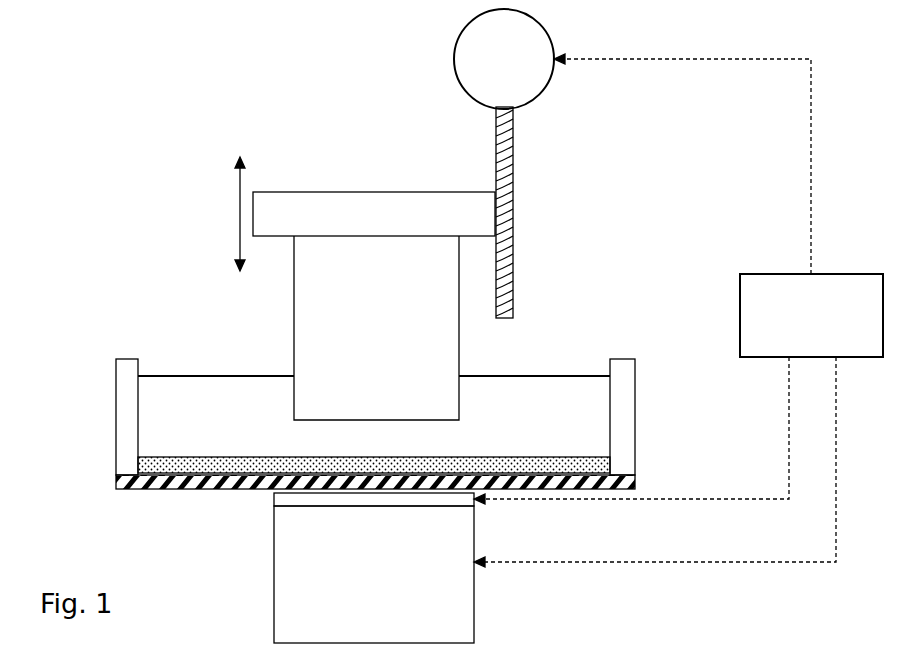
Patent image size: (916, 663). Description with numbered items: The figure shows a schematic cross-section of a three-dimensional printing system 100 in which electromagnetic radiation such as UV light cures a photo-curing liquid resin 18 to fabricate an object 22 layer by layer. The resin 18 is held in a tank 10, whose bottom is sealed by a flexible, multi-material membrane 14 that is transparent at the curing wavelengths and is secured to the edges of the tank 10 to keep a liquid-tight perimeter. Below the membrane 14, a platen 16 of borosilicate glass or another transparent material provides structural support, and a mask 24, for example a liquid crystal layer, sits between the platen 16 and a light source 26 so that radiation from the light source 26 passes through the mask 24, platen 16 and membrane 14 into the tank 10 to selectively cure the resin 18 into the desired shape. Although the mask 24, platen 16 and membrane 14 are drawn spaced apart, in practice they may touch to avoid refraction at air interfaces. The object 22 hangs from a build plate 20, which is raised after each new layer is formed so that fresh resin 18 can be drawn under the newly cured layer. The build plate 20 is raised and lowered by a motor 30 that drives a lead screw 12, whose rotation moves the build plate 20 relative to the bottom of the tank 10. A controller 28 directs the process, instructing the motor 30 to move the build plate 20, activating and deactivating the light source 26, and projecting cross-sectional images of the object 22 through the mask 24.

The 3D printing system 100 is at (122, 256).
The tank 10 is at (123, 377).
The lead screw 12 is at (496, 120).
The flexible multi-material membrane 14 is at (138, 468).
The platen 16 is at (174, 492).
The photo-curing liquid resin 18 is at (552, 420).
The build plate 20 is at (361, 227).
The object 22 is at (363, 340).
The mask 24 is at (285, 498).
The light source 26 is at (361, 586).
The controller 28 is at (798, 325).
The motor 30 is at (504, 59).